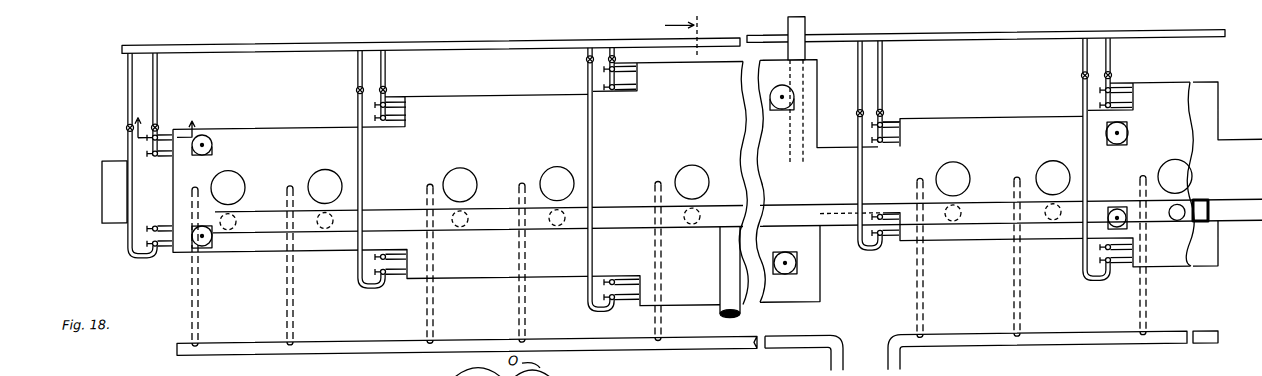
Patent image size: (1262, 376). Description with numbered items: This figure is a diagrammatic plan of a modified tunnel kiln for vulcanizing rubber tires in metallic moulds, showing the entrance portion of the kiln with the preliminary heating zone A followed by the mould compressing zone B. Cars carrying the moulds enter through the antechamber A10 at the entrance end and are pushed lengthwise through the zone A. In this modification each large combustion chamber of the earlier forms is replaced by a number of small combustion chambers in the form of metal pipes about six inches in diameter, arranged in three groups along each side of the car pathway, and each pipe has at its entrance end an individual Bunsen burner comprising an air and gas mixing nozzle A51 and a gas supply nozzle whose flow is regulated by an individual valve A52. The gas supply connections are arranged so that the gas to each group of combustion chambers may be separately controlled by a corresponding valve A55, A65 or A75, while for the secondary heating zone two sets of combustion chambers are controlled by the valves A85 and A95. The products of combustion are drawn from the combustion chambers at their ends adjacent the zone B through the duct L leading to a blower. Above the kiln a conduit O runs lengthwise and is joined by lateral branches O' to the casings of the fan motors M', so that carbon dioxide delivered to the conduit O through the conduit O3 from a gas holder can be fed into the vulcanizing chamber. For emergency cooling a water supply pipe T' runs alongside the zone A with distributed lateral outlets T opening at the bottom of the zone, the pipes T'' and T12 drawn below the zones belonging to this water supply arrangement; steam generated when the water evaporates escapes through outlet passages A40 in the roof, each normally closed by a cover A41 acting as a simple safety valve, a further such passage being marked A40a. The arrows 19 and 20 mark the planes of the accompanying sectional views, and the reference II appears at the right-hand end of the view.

The preliminary heating zone A is at (425, 186).
The mould compressing zone B is at (850, 200).
The conduit O is at (737, 201).
The lateral branch O' is at (702, 225).
The conduit O3 is at (720, 283).
The motor M' is at (701, 171).
The antechamber A10 is at (673, 56).
The outlet passage A40 is at (212, 151).
The pump A40a is at (1128, 146).
The cover A41 is at (1128, 154).
The air and gas mixing nozzle A51 is at (395, 104).
The individual valve A52 is at (378, 104).
The valve A55 is at (127, 126).
The valve A65 is at (356, 92).
The valve A75 is at (588, 66).
The valve A85 is at (857, 121).
The valve A95 is at (1082, 86).
The duct L is at (808, 39).
The lateral outlet T is at (426, 263).
The water supply pipe T' is at (1031, 257).
The collector pipe T'' is at (510, 355).
The collector pipe T12 is at (1043, 356).
The section line 19 is at (690, 36).
The section line 20 is at (165, 118).
The section reference II is at (1252, 153).